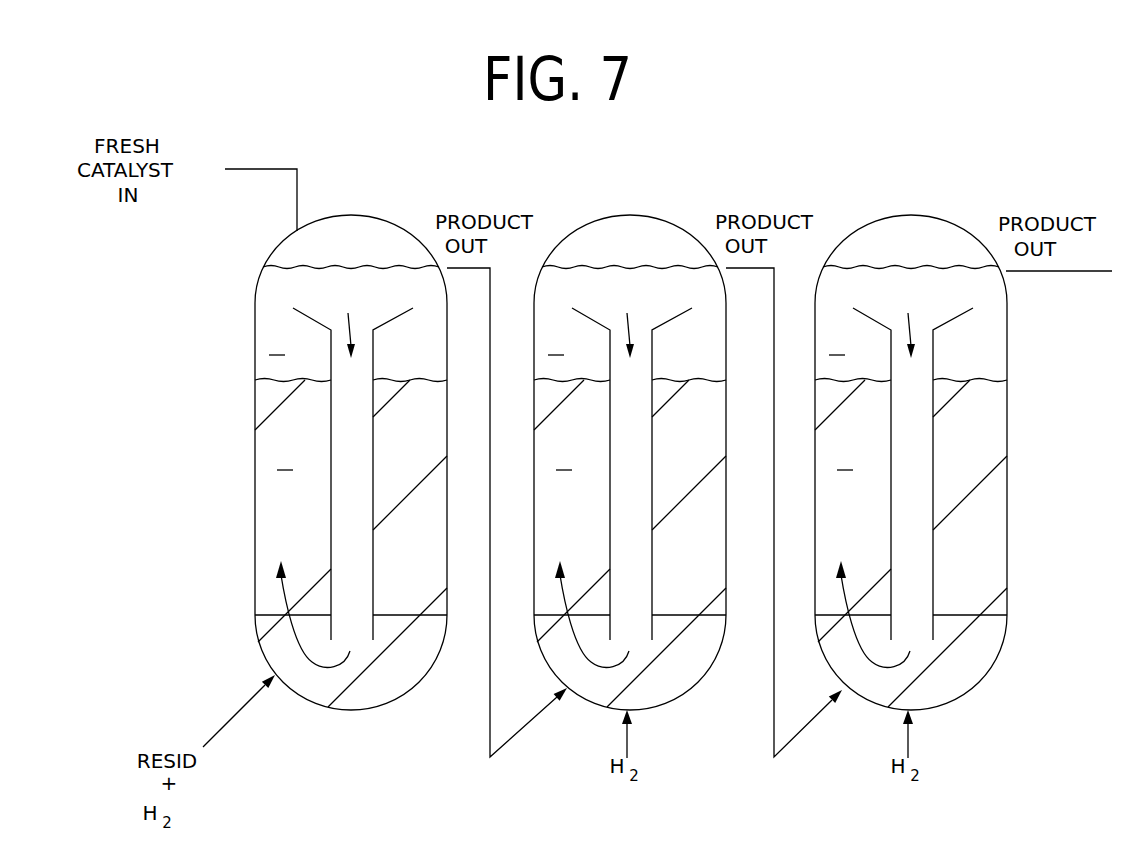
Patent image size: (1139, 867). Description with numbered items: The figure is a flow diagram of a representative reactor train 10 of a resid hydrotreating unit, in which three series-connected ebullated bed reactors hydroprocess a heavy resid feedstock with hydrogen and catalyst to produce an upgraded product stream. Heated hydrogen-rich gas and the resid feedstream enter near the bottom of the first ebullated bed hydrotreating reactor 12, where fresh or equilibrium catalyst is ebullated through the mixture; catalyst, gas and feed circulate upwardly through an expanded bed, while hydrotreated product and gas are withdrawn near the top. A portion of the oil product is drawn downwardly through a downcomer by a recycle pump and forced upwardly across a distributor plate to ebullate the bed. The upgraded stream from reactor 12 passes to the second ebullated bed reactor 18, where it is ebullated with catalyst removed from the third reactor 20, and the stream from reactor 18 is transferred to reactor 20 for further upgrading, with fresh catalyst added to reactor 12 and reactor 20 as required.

The reactor train 10 is at (774, 158).
The first ebullated bed hydrotreating reactor 12 is at (351, 441).
The second ebullated bed reactor 18 is at (630, 441).
The third reactor 20 is at (911, 441).